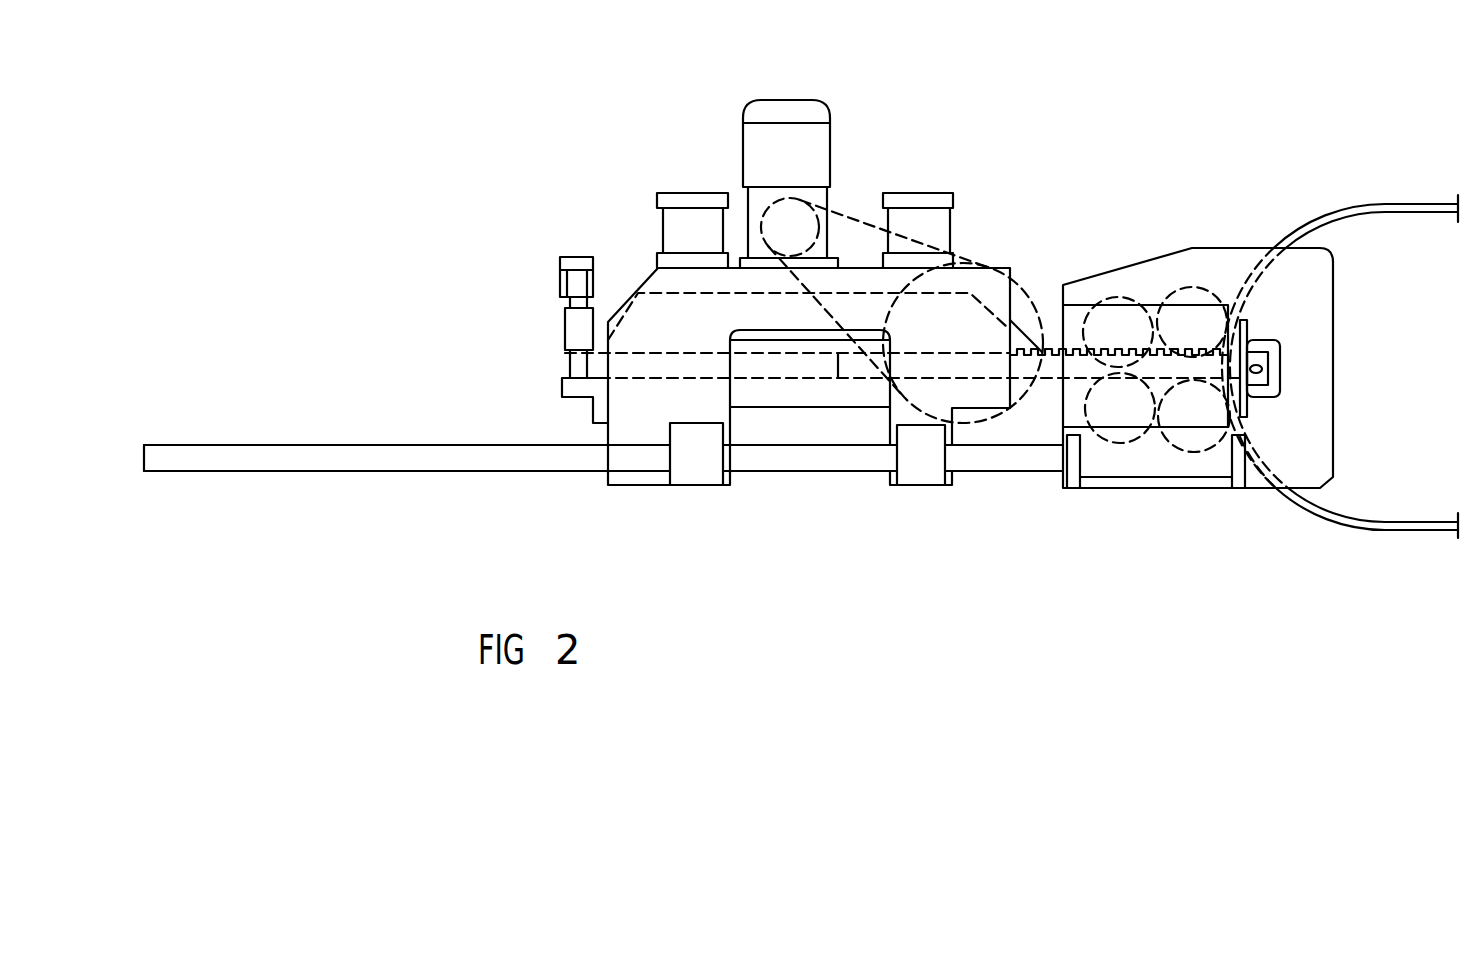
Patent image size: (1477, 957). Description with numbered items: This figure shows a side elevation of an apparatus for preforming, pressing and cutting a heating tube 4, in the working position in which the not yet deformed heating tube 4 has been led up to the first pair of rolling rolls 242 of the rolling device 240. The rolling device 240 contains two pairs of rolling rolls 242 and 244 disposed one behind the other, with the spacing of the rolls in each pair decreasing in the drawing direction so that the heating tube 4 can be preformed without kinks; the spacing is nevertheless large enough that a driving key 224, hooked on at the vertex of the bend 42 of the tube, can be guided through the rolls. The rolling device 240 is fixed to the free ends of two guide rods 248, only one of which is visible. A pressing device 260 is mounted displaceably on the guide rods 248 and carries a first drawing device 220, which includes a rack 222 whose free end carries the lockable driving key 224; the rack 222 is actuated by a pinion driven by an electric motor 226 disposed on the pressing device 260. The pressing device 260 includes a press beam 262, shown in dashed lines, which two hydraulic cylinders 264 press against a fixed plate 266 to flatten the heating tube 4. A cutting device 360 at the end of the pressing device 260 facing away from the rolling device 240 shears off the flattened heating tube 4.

The heating tube 4 is at (1408, 527).
The bend 42 is at (1277, 477).
The first drawing device 220 is at (1055, 378).
The rack 222 is at (1058, 378).
The driving key 224 is at (1267, 368).
The electric motor 226 is at (810, 155).
The rolling device 240 is at (1195, 171).
The first pair of rolling rolls 242 is at (1195, 297).
The second pair of rolling rolls 244 is at (1112, 327).
The guide rods 248 is at (358, 463).
The pressing device 260 is at (830, 60).
The press beam 262 is at (667, 333).
The hydraulic cylinders 264 is at (692, 227).
The fixed plate 266 is at (818, 390).
The cutting device 360 is at (578, 325).